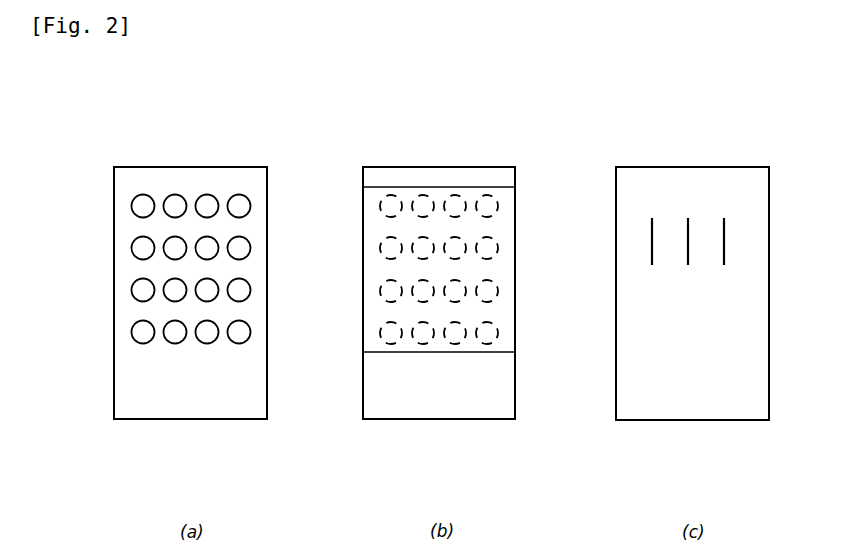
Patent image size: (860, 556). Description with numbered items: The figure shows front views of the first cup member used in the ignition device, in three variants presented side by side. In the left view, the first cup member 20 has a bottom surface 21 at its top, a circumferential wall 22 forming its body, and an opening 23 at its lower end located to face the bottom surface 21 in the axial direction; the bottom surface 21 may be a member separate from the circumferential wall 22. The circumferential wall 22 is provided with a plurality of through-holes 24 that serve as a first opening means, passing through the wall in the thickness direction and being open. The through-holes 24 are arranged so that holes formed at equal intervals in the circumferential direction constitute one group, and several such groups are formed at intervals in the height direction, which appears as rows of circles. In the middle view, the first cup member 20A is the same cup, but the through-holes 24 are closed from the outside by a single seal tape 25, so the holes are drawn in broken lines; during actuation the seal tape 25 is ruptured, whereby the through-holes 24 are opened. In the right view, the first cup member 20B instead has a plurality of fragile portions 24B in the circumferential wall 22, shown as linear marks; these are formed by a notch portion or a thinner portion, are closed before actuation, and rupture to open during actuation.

The first cup member 20 is at (222, 167).
The first cup member 20A is at (477, 167).
The first cup member 20B is at (734, 167).
The bottom surface 21 is at (150, 166).
The circumferential wall 22 is at (122, 232).
The opening 23 is at (142, 419).
The through-holes 24 is at (240, 208).
The fragile portions 24B is at (725, 250).
The seal tape 25 is at (502, 303).